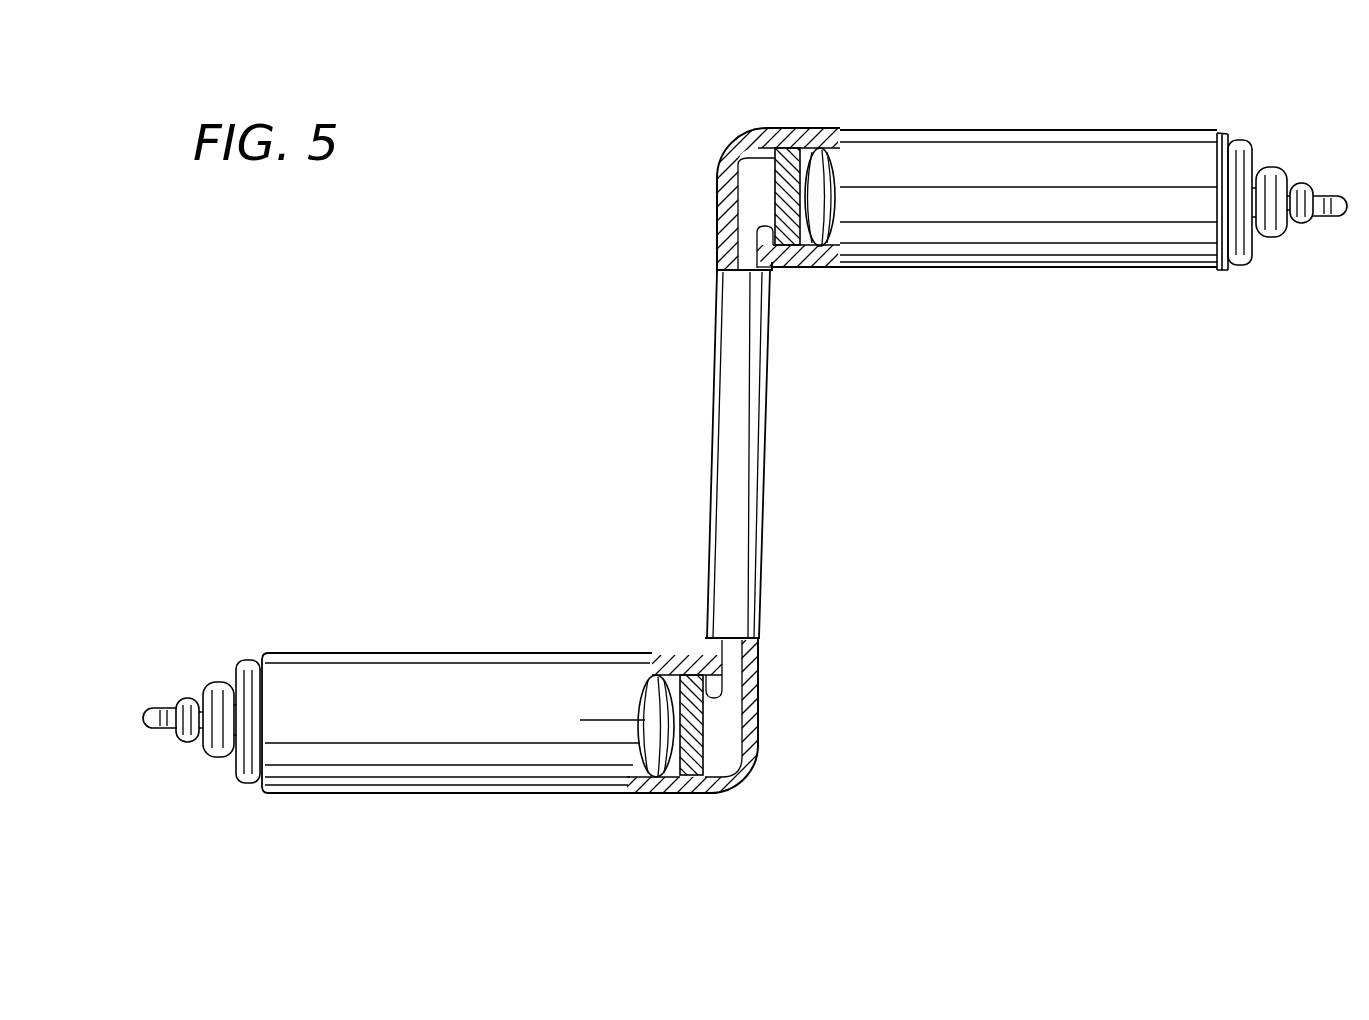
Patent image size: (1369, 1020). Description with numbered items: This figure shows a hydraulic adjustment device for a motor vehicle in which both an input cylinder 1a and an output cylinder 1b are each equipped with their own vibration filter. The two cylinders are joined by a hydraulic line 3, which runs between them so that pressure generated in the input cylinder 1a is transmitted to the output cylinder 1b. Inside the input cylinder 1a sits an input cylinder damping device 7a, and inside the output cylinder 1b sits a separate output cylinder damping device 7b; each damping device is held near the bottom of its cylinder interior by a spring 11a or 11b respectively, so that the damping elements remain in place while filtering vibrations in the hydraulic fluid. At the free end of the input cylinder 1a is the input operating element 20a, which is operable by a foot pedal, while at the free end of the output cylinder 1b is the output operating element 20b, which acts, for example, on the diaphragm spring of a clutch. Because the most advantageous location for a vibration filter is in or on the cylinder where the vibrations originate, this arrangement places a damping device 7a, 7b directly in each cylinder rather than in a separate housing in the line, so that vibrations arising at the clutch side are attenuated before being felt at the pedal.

The input cylinder 1a is at (1011, 135).
The output cylinder 1b is at (445, 778).
The hydraulic line 3 is at (750, 509).
The input cylinder damping device 7a is at (798, 148).
The output cylinder damping device 7b is at (684, 768).
The spring 11a is at (822, 150).
The spring 11b is at (657, 770).
The input operating element 20a is at (1334, 195).
The output operating element 20b is at (157, 705).